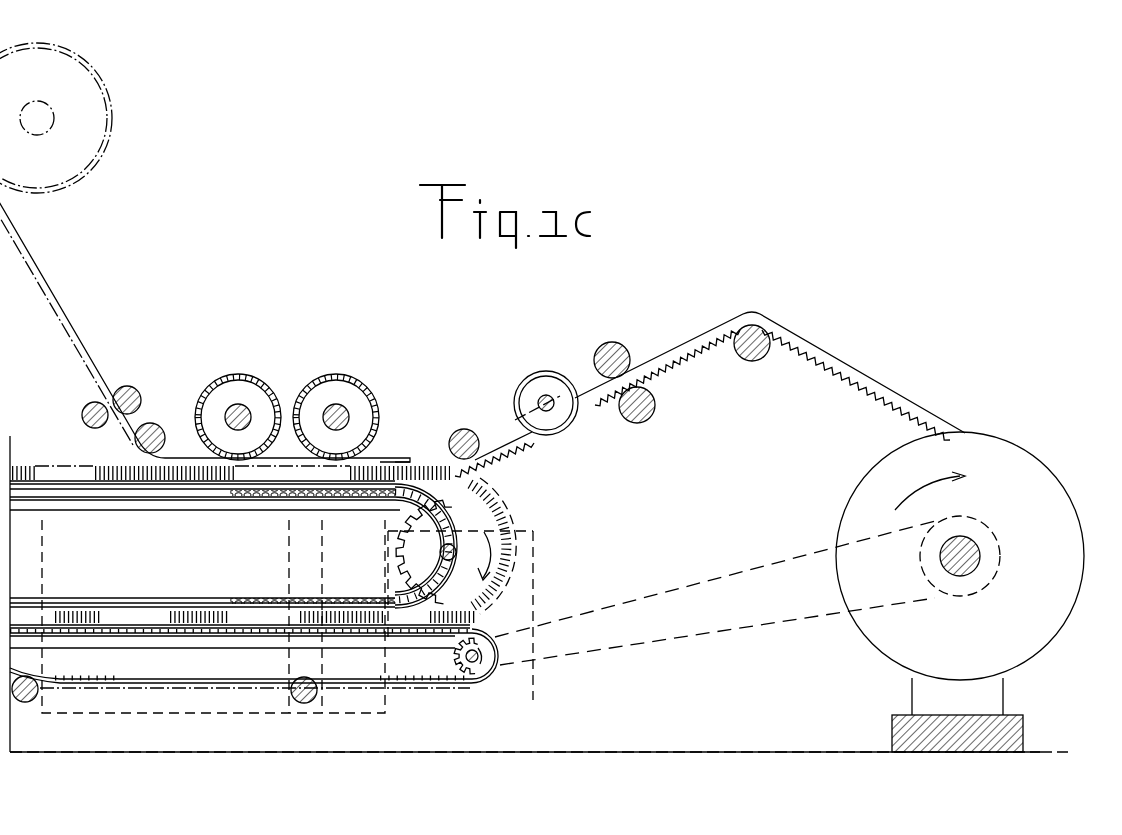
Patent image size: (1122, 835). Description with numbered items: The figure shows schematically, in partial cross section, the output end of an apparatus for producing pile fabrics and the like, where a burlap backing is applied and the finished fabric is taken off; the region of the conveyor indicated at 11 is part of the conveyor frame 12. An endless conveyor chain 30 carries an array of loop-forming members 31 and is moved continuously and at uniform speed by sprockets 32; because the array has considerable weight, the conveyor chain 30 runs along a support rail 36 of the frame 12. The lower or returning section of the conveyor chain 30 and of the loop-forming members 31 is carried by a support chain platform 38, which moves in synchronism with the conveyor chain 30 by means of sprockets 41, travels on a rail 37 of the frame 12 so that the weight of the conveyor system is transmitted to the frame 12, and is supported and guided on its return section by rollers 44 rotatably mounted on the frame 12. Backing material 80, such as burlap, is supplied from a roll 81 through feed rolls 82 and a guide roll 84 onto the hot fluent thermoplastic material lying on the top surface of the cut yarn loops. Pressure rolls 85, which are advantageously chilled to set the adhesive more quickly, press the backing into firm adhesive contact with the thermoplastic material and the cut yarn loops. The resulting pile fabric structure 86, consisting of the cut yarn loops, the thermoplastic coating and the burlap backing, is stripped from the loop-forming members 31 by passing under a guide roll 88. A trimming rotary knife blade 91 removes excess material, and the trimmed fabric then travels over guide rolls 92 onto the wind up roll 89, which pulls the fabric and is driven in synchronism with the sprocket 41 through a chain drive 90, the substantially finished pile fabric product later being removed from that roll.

The web forming station 11 is at (556, 562).
The conveyor frame 12 is at (288, 567).
The endless conveyor chain 30 is at (137, 600).
The loop-forming members 31 is at (505, 512).
The sprockets 32 is at (408, 553).
The support rail 36 is at (112, 503).
The rail 37 is at (160, 640).
The support chain platform 38 is at (452, 692).
The sprockets 41 is at (483, 672).
The rollers 44 is at (290, 691).
The backing material 80 is at (52, 286).
The roll 81 is at (100, 103).
The feed rolls 82 is at (131, 388).
The guide roll 84 is at (157, 425).
The pressure rolls 85 is at (313, 378).
The pile fabric structure 86 is at (410, 460).
The guide roll 88 is at (464, 428).
The wind up roll 89 is at (1028, 452).
The chain drive 90 is at (731, 580).
The trimming rotary knife blade 91 is at (546, 372).
The guide rolls 92 is at (619, 352).